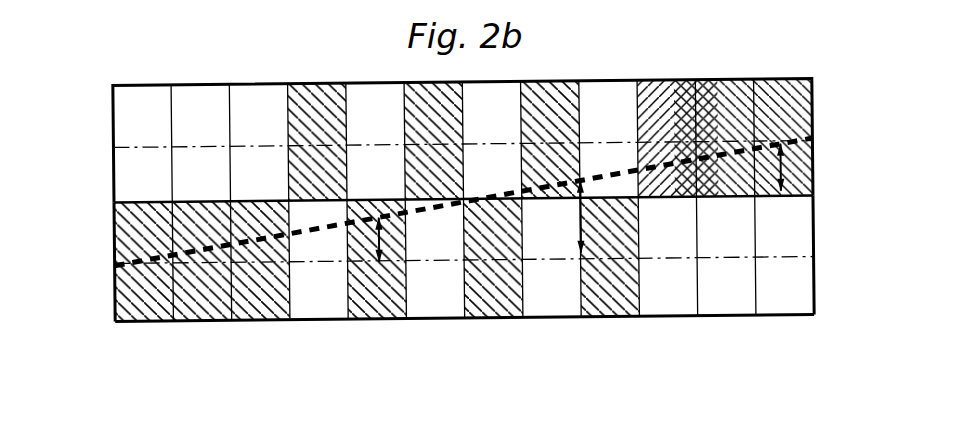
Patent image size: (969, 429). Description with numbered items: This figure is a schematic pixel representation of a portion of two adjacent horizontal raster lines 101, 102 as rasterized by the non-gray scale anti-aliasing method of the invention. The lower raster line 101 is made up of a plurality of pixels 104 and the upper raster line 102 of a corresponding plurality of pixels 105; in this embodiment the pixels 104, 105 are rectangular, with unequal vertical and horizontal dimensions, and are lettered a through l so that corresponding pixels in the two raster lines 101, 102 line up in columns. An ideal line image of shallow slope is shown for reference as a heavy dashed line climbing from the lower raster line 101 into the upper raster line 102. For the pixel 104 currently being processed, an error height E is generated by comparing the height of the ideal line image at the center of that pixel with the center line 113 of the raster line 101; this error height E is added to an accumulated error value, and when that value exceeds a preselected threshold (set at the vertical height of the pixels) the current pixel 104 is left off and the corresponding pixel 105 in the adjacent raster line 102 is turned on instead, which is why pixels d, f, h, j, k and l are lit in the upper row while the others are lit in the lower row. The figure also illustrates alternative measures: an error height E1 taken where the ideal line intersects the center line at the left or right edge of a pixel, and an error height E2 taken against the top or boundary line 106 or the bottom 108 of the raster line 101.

The raster line 101 is at (813, 268).
The raster line 102 is at (813, 103).
The pixels 104 is at (207, 322).
The pixels 105 is at (203, 85).
The top or boundary line 106 is at (665, 197).
The bottom 108 is at (687, 315).
The center line 113 is at (622, 317).
The error height E is at (378, 253).
The error height E1 is at (580, 223).
The error height E2 is at (813, 172).